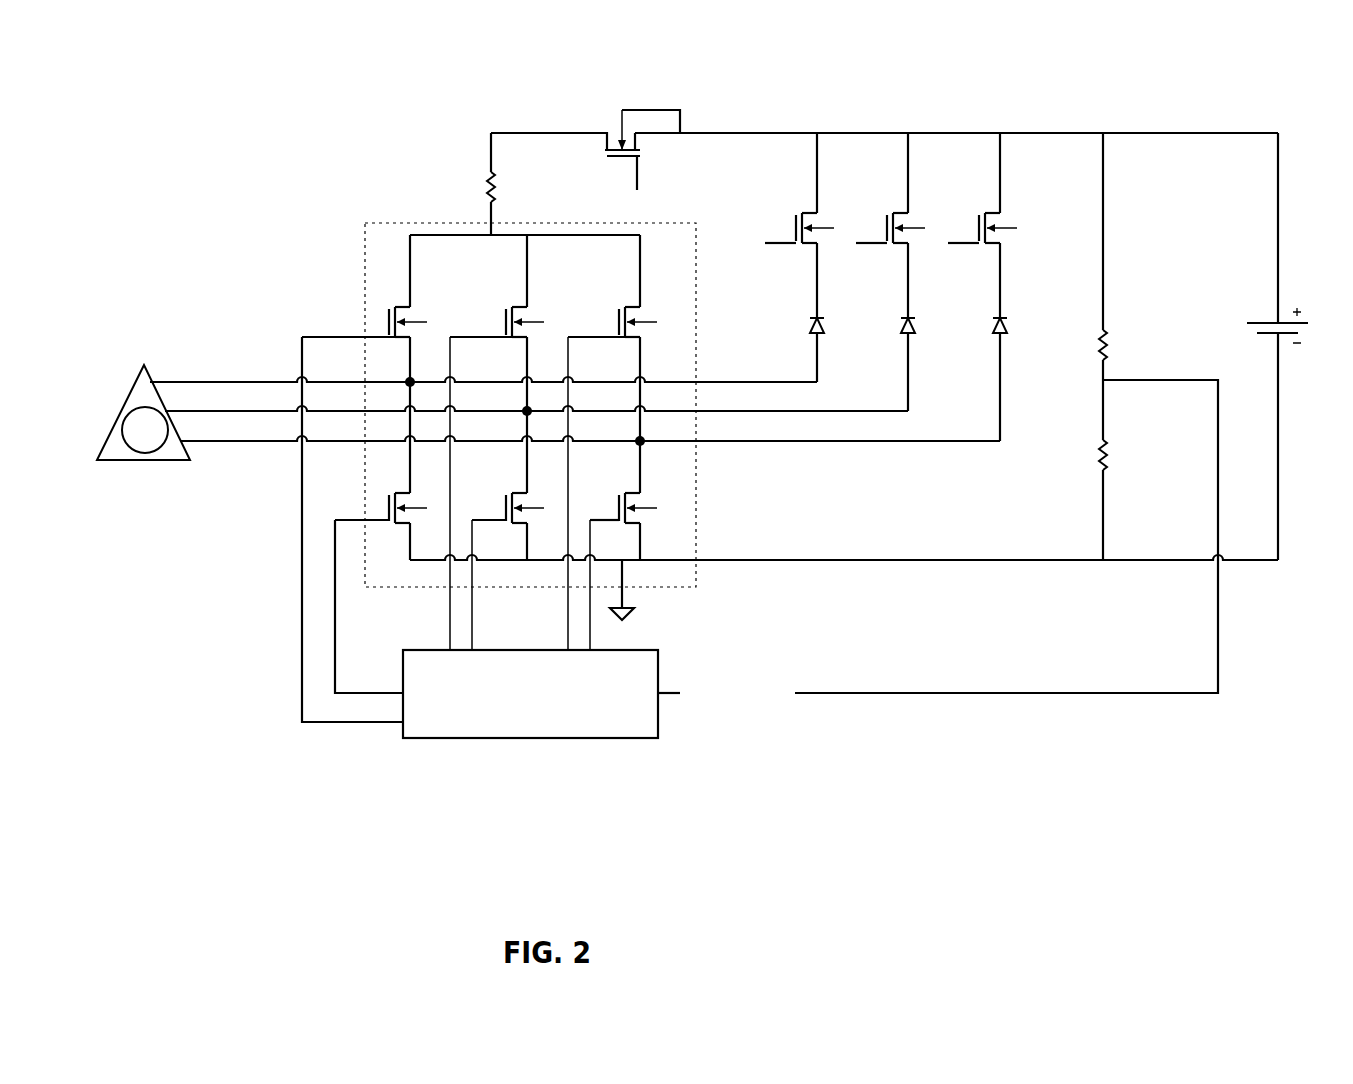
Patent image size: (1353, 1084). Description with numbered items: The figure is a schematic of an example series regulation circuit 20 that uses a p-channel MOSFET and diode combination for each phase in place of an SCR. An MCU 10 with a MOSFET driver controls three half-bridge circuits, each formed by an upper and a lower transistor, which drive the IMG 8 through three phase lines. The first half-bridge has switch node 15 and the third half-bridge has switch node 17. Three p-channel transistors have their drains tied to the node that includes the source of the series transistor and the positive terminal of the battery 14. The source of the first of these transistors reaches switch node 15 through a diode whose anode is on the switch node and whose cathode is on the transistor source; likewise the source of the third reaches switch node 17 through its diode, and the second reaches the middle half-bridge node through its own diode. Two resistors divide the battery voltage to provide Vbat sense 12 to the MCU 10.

The circuit 20 is at (246, 82).
The IMG 8 is at (163, 470).
The MCU 10 is at (608, 719).
The Vbat sense 12 is at (748, 696).
The battery 14 is at (1228, 311).
The switch node 15 is at (402, 376).
The switch node 17 is at (652, 445).